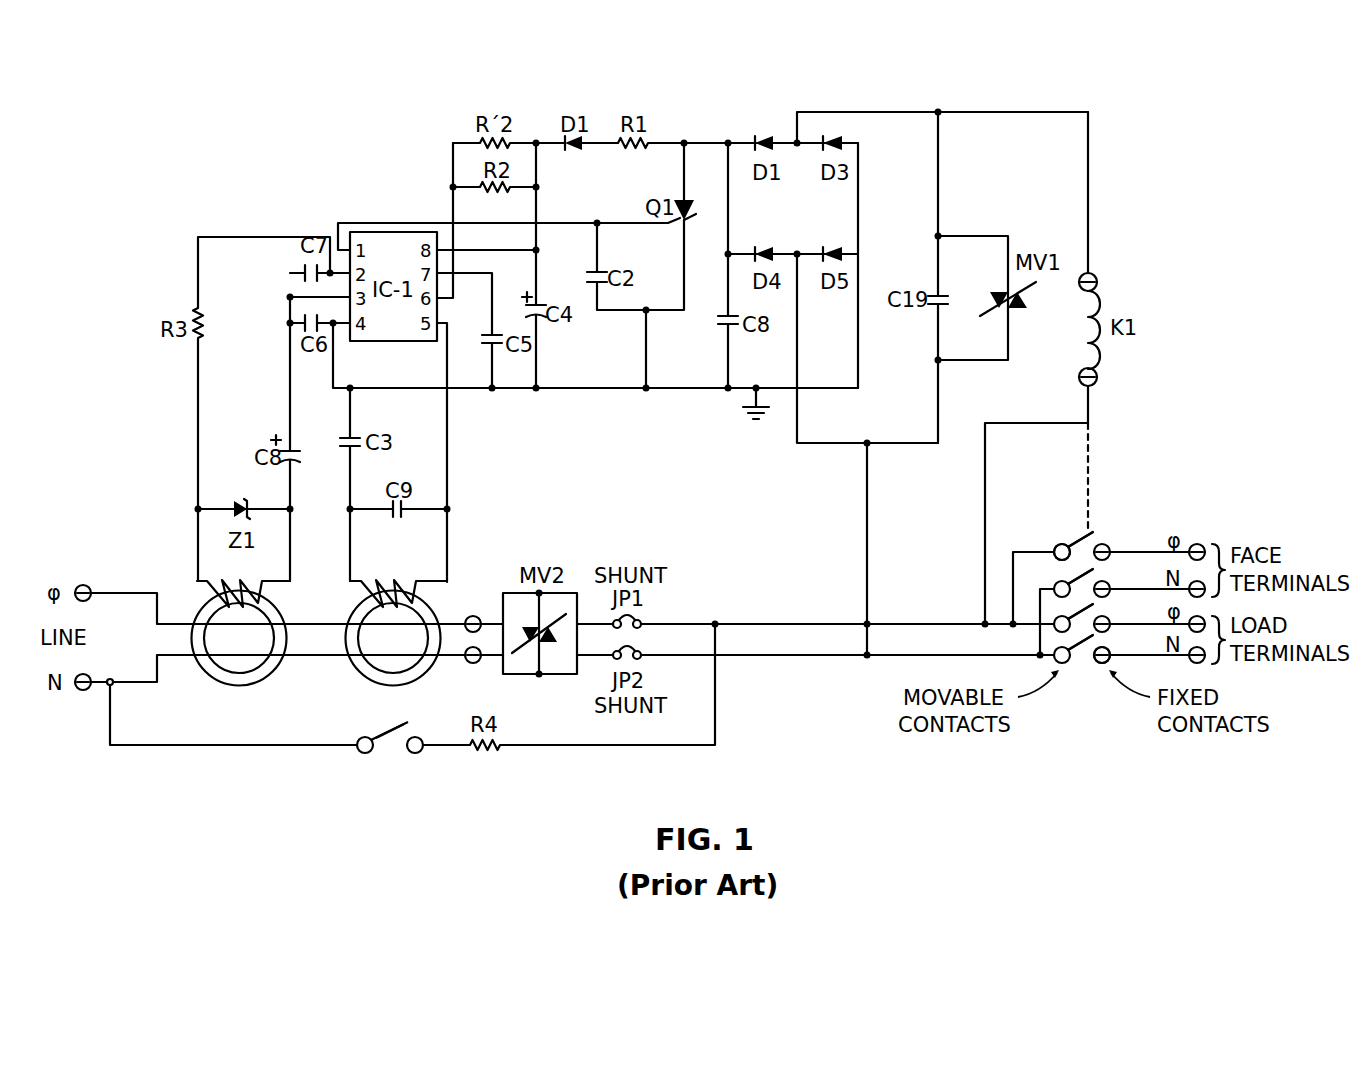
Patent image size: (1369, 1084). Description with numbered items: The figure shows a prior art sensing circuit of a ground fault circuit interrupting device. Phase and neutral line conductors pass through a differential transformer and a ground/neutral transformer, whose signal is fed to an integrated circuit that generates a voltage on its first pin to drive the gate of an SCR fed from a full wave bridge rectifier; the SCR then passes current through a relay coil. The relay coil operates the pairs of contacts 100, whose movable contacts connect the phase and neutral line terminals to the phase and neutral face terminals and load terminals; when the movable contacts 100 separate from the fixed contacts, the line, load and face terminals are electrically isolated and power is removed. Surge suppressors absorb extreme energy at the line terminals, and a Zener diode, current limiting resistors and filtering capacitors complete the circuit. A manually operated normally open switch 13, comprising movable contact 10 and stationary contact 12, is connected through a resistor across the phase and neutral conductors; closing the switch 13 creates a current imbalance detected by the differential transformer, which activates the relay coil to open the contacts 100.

The movable contact 10 is at (362, 755).
The stationary contact 12 is at (418, 755).
The manually operated normally open switch 13 is at (390, 766).
The pairs of contacts 100 is at (1108, 521).